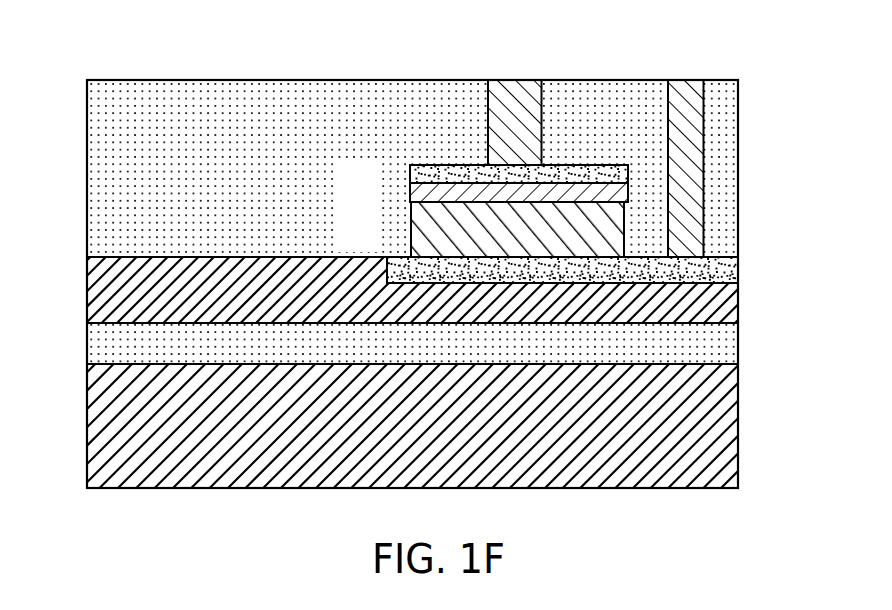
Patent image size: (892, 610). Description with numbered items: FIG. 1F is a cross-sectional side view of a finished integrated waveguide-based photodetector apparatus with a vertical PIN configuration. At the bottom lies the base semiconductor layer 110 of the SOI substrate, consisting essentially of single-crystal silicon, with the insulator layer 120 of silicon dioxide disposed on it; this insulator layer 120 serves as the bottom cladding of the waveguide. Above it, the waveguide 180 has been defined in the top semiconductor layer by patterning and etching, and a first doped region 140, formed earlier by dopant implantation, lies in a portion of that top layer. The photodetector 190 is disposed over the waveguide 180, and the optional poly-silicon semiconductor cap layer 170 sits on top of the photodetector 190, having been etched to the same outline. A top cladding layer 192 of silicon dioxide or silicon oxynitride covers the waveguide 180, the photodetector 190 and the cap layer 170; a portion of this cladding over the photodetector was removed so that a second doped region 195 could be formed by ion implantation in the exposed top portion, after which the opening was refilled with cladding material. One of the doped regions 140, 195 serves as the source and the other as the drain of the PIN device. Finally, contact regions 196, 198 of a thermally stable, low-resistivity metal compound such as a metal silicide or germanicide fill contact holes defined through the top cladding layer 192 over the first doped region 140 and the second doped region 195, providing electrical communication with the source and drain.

The base semiconductor layer 110 is at (105, 449).
The insulator layer 120 is at (103, 338).
The first doped region 140 is at (722, 274).
The semiconductor cap layer 170 is at (412, 193).
The waveguide 180 is at (105, 278).
The photodetector 190 is at (410, 235).
The top cladding layer 192 is at (105, 213).
The second doped region 195 is at (410, 174).
The contact region 196 is at (686, 93).
The contact region 198 is at (520, 93).